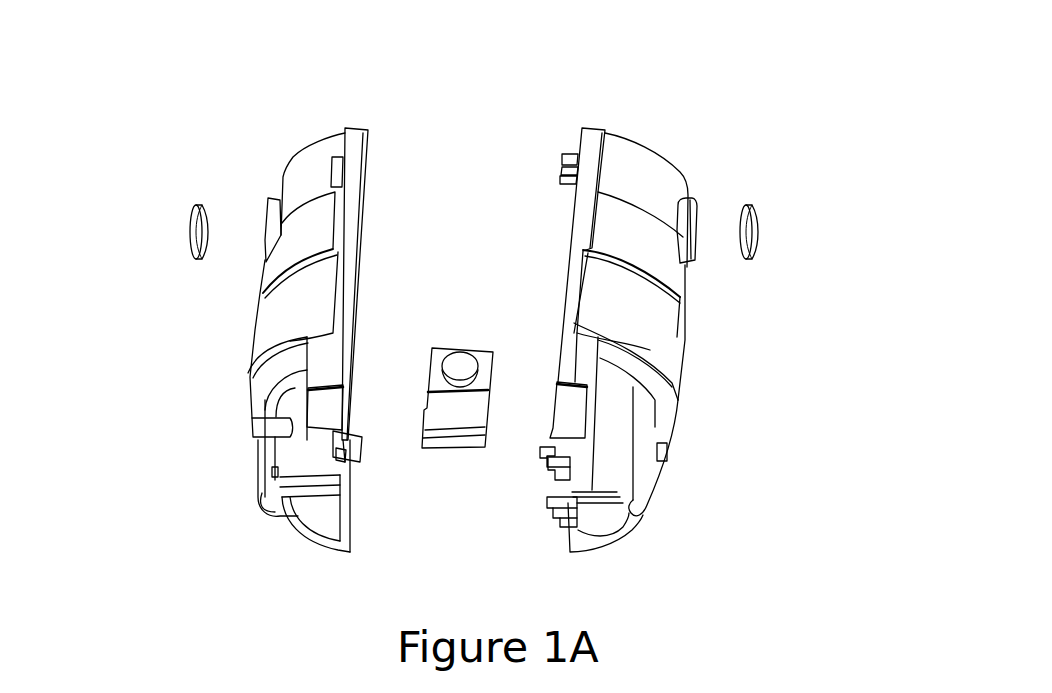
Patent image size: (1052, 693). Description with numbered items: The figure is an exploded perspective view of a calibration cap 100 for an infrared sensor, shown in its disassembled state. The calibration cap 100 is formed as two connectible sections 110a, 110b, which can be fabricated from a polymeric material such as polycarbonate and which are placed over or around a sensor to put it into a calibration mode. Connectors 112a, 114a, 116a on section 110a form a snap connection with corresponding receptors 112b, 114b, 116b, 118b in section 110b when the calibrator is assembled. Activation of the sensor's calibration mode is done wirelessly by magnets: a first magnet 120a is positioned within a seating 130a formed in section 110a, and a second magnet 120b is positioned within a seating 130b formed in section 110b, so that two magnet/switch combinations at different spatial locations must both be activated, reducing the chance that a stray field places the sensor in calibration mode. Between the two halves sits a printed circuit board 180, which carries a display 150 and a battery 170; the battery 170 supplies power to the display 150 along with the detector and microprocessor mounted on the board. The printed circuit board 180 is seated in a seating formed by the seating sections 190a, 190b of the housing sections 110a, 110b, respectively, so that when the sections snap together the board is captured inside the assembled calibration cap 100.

The calibration cap 100 is at (633, 73).
The connectible section 110a is at (655, 135).
The connectible section 110b is at (277, 130).
The connector 112a is at (545, 522).
The receptor 112b is at (353, 517).
The connector 114a is at (542, 440).
The receptor 114b is at (340, 455).
The connector 116a is at (550, 148).
The receptor 116b is at (370, 150).
The receptor 118b is at (340, 453).
The magnet 120a is at (772, 230).
The magnet 120b is at (167, 228).
The seating 130a is at (690, 268).
The seating 130b is at (252, 195).
The display 150 is at (455, 418).
The battery 170 is at (463, 357).
The printed circuit board 180 is at (237, 428).
The seating section 190a is at (575, 404).
The seating section 190b is at (308, 410).